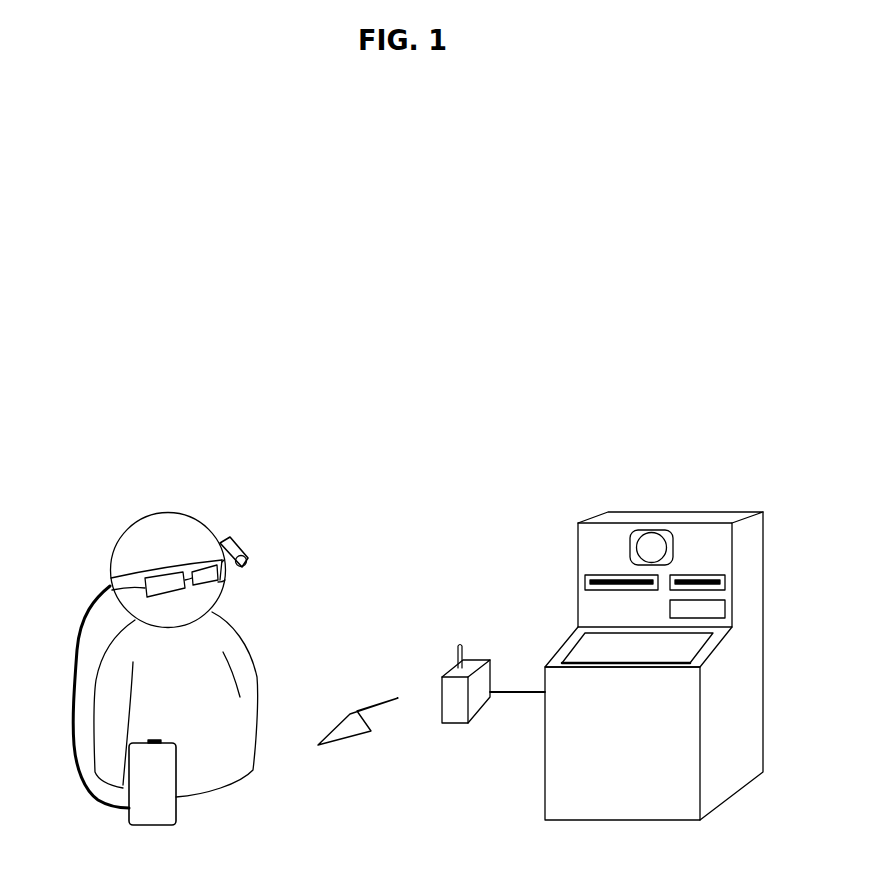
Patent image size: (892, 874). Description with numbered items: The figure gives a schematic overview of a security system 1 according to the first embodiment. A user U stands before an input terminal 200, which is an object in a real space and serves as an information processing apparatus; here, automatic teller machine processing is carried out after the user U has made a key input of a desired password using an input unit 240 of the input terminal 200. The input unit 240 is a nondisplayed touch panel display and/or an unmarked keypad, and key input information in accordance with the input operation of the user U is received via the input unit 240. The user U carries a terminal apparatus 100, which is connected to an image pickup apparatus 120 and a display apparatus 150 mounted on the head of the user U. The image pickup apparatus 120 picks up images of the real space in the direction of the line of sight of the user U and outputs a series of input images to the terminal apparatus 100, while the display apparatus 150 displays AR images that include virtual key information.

The security system 1 is at (95, 375).
The user U is at (233, 663).
The terminal apparatus 100 is at (157, 805).
The image pickup apparatus 120 is at (230, 546).
The display apparatus 150 is at (222, 586).
The input terminal 200 is at (681, 512).
The input unit 240 is at (645, 648).